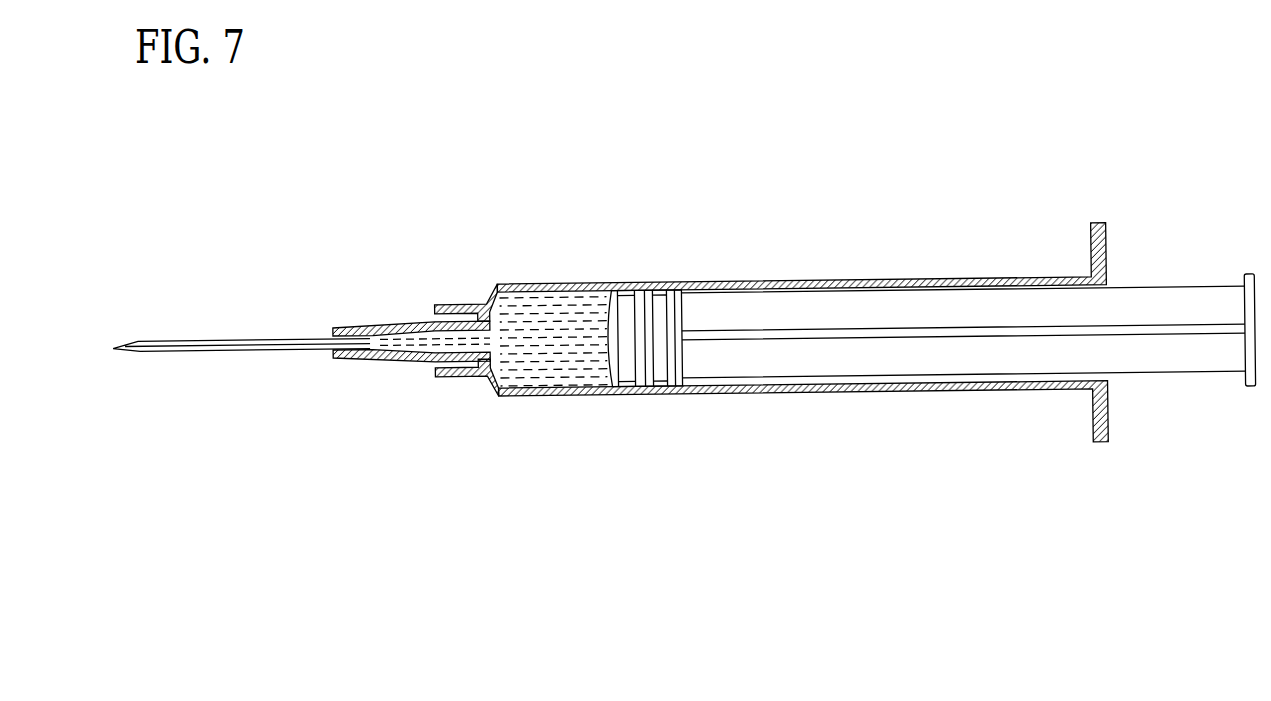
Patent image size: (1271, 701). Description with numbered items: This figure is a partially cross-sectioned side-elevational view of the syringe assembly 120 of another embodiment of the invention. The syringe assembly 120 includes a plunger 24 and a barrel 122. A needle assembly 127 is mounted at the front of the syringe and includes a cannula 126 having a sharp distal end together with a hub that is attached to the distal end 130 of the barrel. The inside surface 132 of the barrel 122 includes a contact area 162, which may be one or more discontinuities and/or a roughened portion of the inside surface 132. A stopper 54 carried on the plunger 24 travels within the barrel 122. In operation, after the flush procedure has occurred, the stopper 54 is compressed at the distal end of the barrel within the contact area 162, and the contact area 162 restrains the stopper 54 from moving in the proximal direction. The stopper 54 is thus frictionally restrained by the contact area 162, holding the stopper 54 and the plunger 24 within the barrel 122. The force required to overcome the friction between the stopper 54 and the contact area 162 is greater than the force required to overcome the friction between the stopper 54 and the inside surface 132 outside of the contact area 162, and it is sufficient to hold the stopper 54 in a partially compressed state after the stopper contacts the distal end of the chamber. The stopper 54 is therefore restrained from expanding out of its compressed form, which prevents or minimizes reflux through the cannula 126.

The plunger 24 is at (1137, 295).
The stopper 54 is at (647, 366).
The syringe assembly 120 is at (857, 405).
The barrel 122 is at (795, 282).
The cannula 126 is at (210, 350).
The needle assembly 127 is at (369, 318).
The distal end of the barrel 130 is at (500, 403).
The inside surface 132 is at (573, 305).
The contact area 162 is at (527, 287).